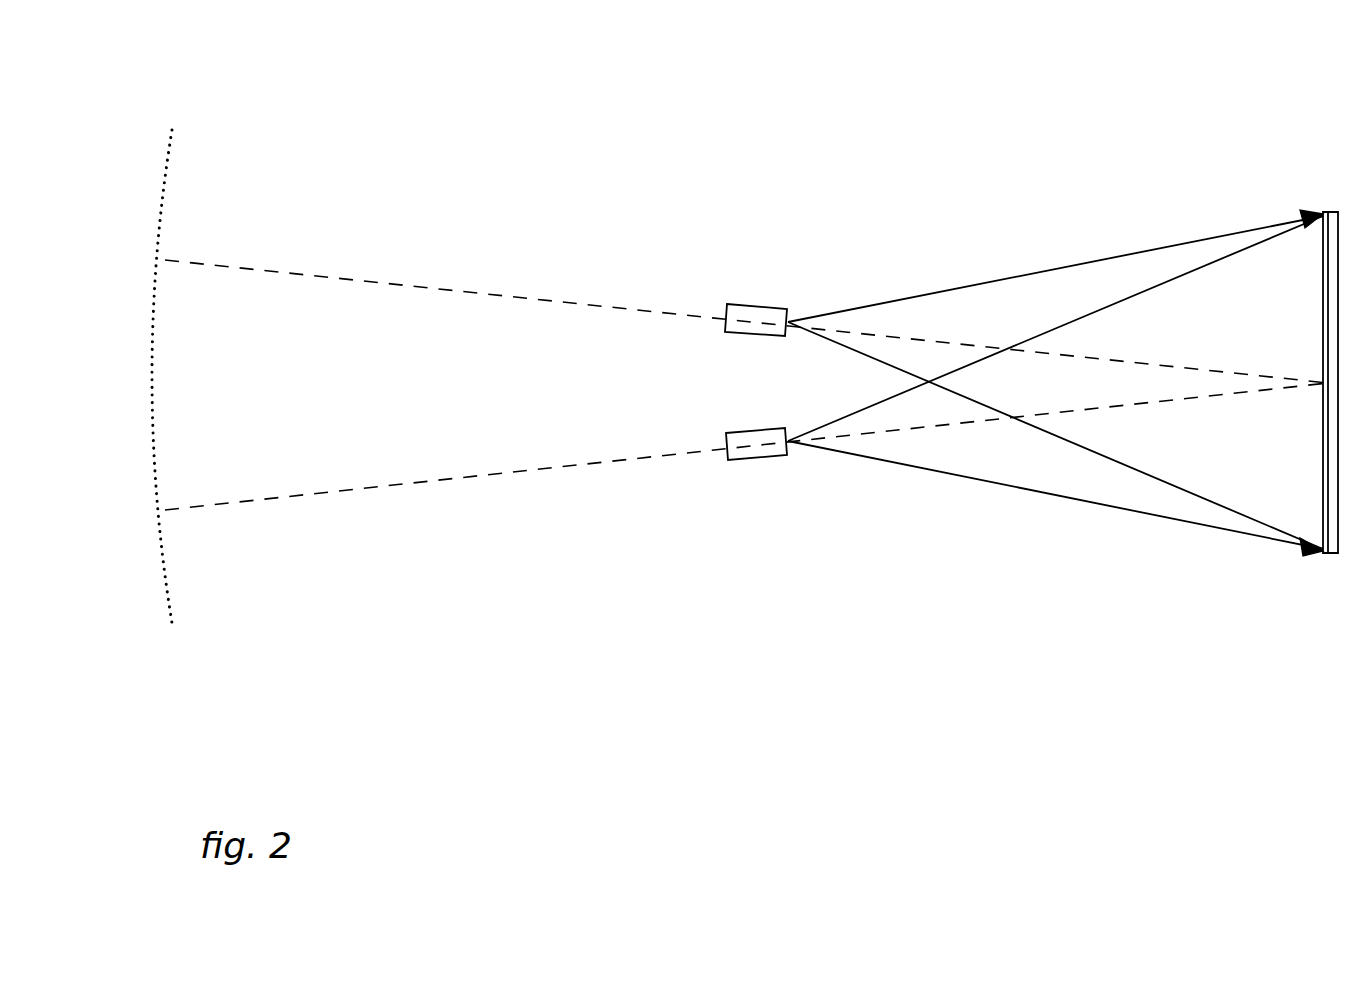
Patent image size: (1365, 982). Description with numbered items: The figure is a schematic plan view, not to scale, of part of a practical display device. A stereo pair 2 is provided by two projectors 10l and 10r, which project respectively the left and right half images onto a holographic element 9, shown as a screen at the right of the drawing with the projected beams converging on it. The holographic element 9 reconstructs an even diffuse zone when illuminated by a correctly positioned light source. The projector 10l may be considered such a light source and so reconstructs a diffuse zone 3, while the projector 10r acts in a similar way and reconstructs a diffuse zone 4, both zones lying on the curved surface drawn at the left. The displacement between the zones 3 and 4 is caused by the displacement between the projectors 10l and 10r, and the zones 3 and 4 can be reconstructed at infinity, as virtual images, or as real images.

The stereo pair 2 is at (550, 113).
The diffuse zone 3 is at (170, 191).
The diffuse zone 4 is at (178, 587).
The holographic element 9 is at (1326, 322).
The projector 10l is at (737, 305).
The projector 10r is at (727, 460).